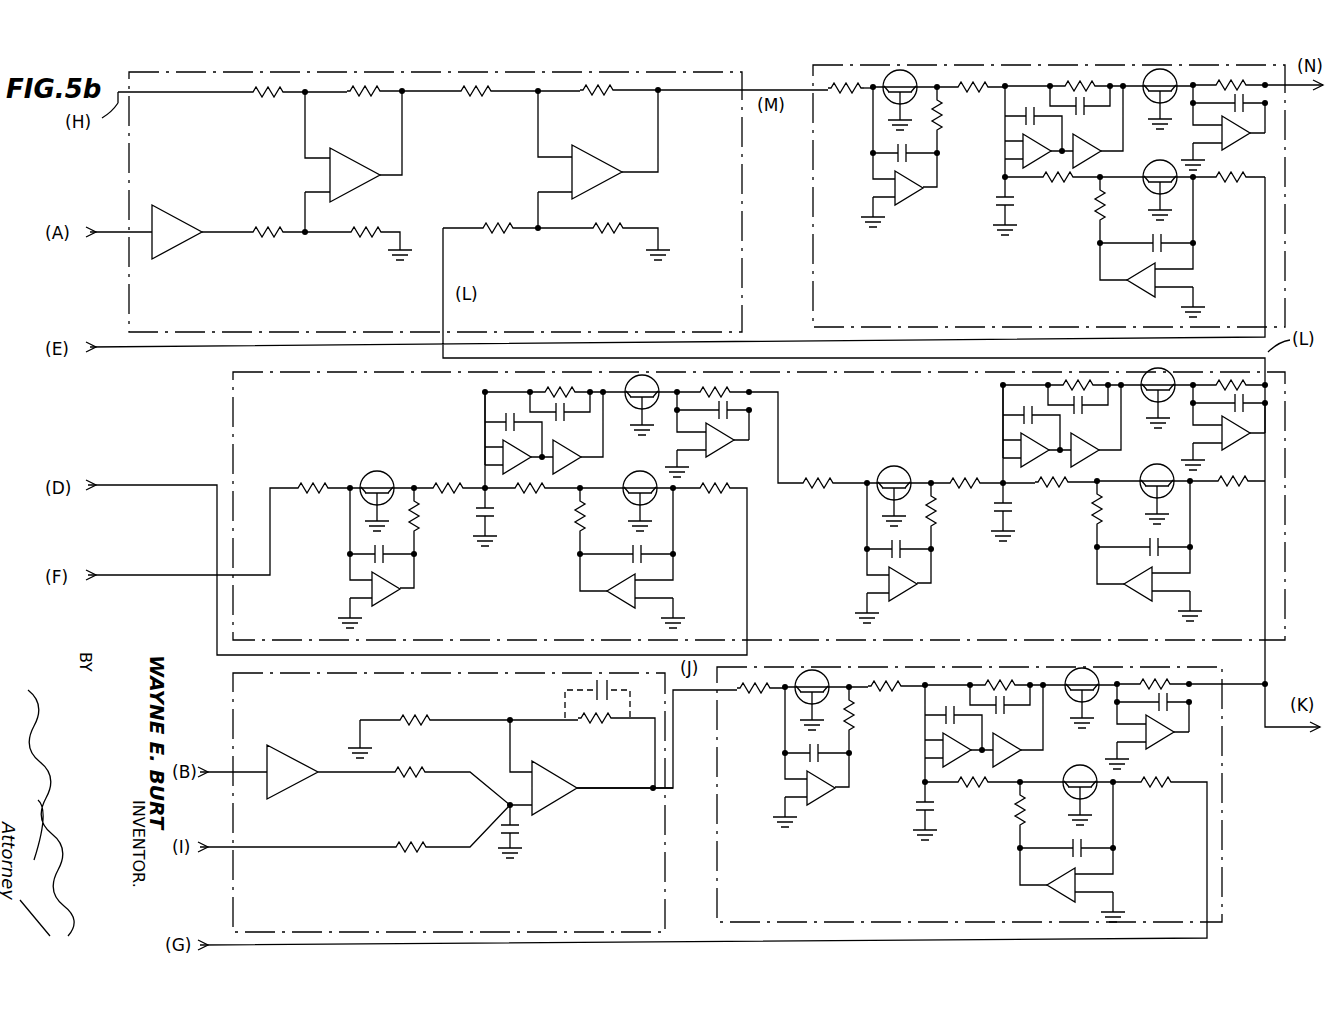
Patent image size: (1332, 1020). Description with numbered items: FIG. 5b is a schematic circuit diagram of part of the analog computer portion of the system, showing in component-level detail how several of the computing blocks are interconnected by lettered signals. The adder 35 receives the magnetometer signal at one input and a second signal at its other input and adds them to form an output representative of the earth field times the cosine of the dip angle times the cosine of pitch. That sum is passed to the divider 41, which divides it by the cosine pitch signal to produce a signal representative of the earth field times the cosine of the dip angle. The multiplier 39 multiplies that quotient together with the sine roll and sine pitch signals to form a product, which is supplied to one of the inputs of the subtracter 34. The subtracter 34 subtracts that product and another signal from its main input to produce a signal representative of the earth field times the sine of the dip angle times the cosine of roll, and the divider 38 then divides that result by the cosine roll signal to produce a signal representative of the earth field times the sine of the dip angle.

The subtracter circuit 34 is at (122, 192).
The divider circuit 38 is at (805, 185).
The multiplier circuit 39 is at (225, 408).
The adder circuit 35 is at (225, 713).
The divider circuit 41 is at (708, 848).